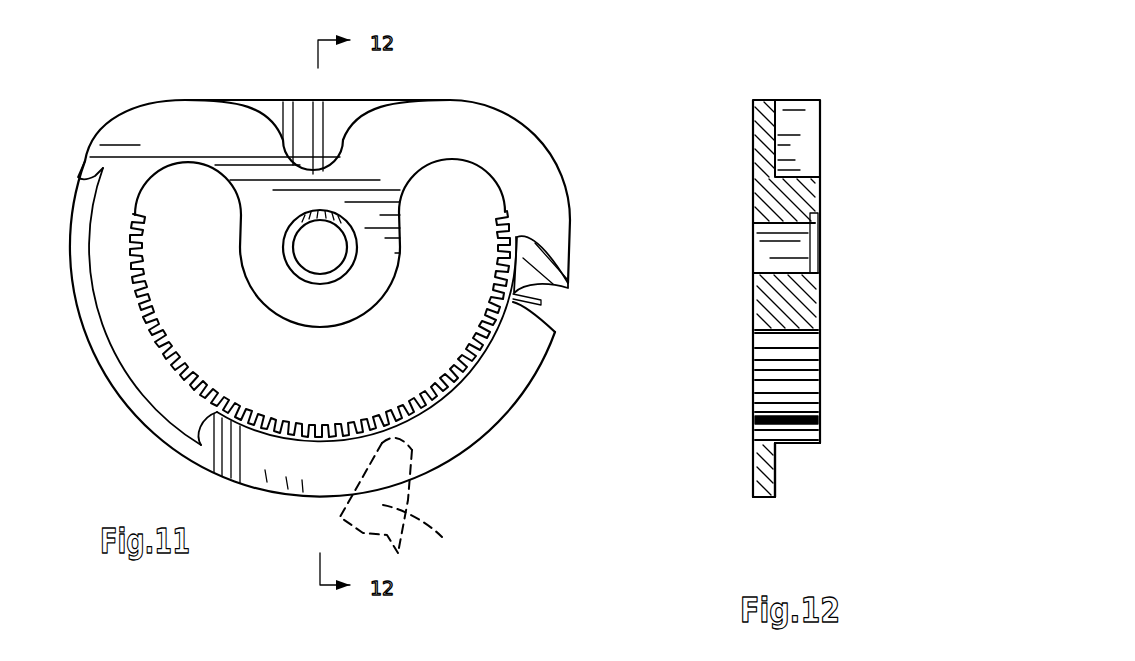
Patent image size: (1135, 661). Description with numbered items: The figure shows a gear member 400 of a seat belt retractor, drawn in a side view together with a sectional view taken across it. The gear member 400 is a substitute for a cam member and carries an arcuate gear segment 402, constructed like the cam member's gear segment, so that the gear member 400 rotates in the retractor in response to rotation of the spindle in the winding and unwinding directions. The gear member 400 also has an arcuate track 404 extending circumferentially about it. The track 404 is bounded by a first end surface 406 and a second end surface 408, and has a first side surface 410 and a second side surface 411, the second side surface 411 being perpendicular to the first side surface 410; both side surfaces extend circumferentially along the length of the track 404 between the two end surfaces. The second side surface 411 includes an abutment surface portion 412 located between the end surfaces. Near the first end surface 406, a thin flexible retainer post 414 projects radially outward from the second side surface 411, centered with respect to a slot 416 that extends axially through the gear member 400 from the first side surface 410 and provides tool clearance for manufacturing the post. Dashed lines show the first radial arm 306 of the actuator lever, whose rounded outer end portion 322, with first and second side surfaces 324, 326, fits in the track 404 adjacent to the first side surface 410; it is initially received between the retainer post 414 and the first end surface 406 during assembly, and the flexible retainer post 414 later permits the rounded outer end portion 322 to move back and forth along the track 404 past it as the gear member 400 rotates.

In FIG. 11, the gear member 400 is at (158, 100).
In FIG. 12, the gear member 400 is at (820, 100).
In FIG. 11, the arcuate gear segment 402 is at (359, 298).
In FIG. 12, the arcuate gear segment 402 is at (831, 396).
In FIG. 11, the arcuate track 404 is at (503, 370).
In FIG. 12, the arcuate track 404 is at (808, 467).
In FIG. 11, the first end surface 406 is at (570, 288).
In FIG. 11, the second end surface 408 is at (92, 168).
In FIG. 11, the first side surface 410 is at (250, 458).
In FIG. 12, the first side surface 410 is at (780, 473).
In FIG. 11, the second side surface 411 is at (453, 397).
In FIG. 12, the second side surface 411 is at (807, 447).
In FIG. 11, the abutment surface portion 412 is at (196, 462).
In FIG. 11, the flexible retainer post 414 is at (541, 302).
In FIG. 11, the slot 416 is at (562, 319).
In FIG. 11, the first radial arm 306 is at (406, 504).
In FIG. 11, the rounded outer end portion 322 is at (428, 538).
In FIG. 11, the first side surface 324 is at (408, 500).
In FIG. 11, the second side surface 326 is at (363, 475).